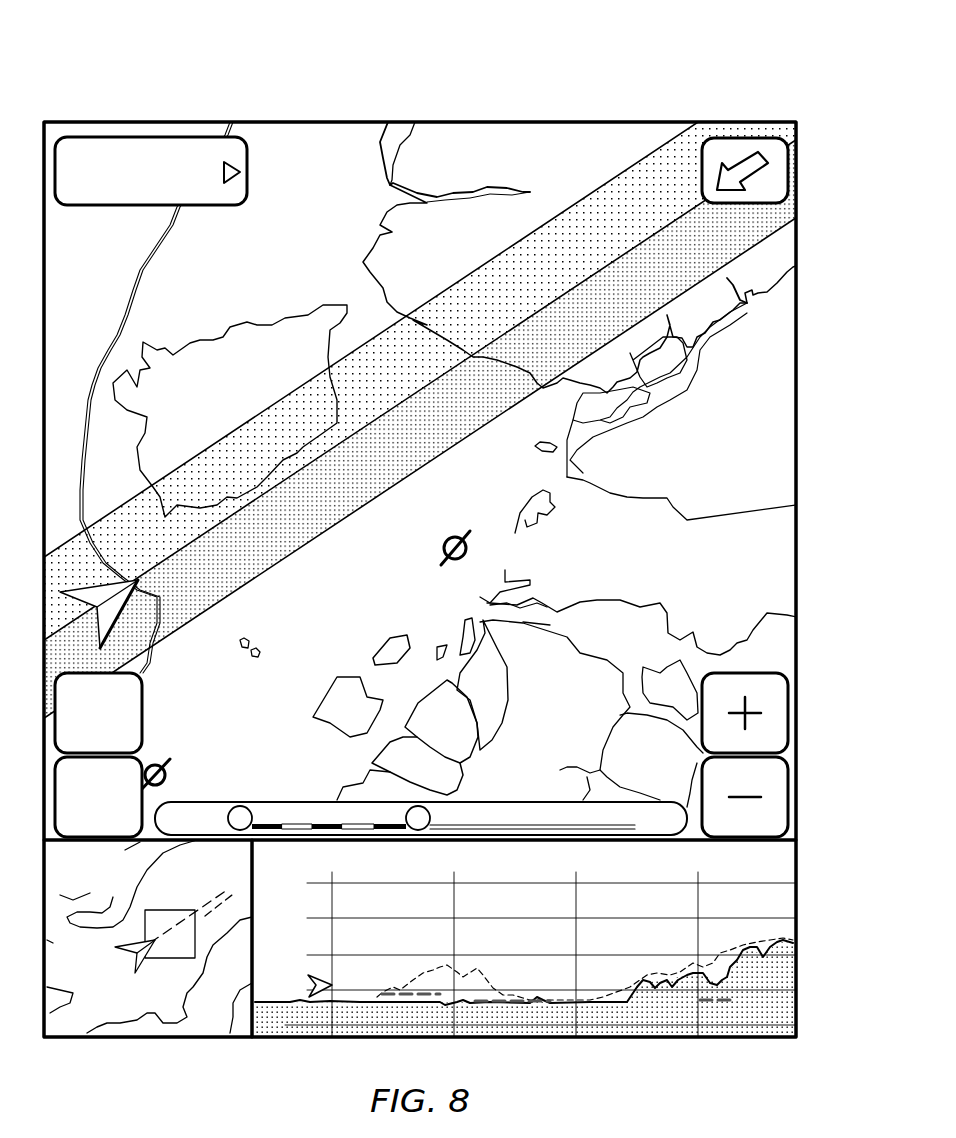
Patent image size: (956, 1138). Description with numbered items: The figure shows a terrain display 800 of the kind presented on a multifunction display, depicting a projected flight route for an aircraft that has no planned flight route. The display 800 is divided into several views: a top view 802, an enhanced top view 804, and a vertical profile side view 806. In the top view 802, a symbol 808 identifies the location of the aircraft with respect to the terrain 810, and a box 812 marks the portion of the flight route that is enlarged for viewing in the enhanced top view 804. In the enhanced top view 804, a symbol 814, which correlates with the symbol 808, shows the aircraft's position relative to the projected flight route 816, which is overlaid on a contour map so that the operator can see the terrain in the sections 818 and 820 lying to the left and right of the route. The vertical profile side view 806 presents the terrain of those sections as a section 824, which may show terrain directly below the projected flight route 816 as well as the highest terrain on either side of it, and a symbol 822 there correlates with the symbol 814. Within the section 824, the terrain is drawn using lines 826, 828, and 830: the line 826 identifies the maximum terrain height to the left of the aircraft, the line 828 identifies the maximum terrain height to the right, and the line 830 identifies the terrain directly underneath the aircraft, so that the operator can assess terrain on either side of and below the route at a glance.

The display 800 is at (291, 62).
The top view 802 is at (148, 969).
The enhanced top view 804 is at (425, 430).
The vertical profile side view 806 is at (554, 969).
The symbol 808 is at (127, 963).
The terrain 810 is at (103, 878).
The box 812 is at (167, 952).
The symbol 814 is at (112, 610).
The projected flight route 816 is at (455, 367).
The section 818 is at (275, 263).
The section 820 is at (637, 645).
The symbol 822 is at (330, 978).
The section 824 is at (790, 1008).
The line 826 is at (478, 980).
The line 828 is at (437, 995).
The line 830 is at (720, 955).